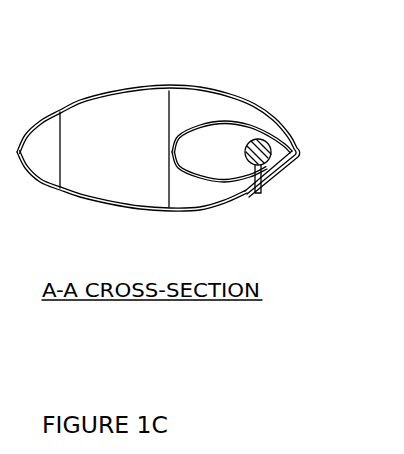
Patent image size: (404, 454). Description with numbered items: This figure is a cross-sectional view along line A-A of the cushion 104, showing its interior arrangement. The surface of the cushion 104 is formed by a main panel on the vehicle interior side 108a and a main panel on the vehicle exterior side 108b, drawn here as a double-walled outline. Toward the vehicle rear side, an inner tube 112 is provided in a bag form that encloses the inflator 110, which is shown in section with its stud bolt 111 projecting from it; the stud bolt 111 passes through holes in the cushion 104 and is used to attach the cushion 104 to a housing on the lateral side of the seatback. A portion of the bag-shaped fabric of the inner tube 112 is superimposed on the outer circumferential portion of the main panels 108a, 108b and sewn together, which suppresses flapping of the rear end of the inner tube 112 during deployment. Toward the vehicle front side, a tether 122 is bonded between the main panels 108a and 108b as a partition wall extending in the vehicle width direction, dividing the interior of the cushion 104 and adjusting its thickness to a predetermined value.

The cushion 104 is at (153, 133).
The main panel on the vehicle interior side 108a is at (40, 189).
The main panel on the vehicle exterior side 108b is at (38, 123).
The inflator 110 is at (265, 140).
The stud bolt 111 is at (262, 196).
The inner tube 112 is at (208, 122).
The tether 122 is at (172, 109).